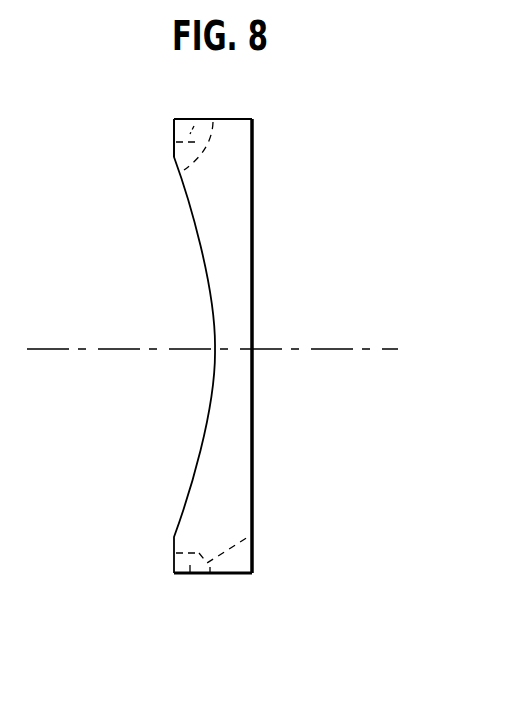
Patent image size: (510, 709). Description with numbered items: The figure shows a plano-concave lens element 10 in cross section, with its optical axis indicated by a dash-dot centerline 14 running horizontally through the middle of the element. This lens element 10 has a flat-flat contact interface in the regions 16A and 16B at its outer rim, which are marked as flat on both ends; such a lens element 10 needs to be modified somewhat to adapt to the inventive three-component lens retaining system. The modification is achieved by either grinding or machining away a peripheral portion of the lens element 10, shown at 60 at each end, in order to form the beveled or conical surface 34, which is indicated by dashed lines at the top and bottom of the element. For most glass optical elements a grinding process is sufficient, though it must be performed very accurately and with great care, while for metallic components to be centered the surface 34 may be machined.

The lens element 10 is at (240, 457).
The longitudinal axis / centerline 14 is at (131, 348).
The flat-flat contact region 16A is at (174, 125).
The flat-flat contact region 16B is at (254, 118).
The beveled or conical surface 34 is at (178, 170).
The peripheral portion of the lens element 60 is at (194, 126).